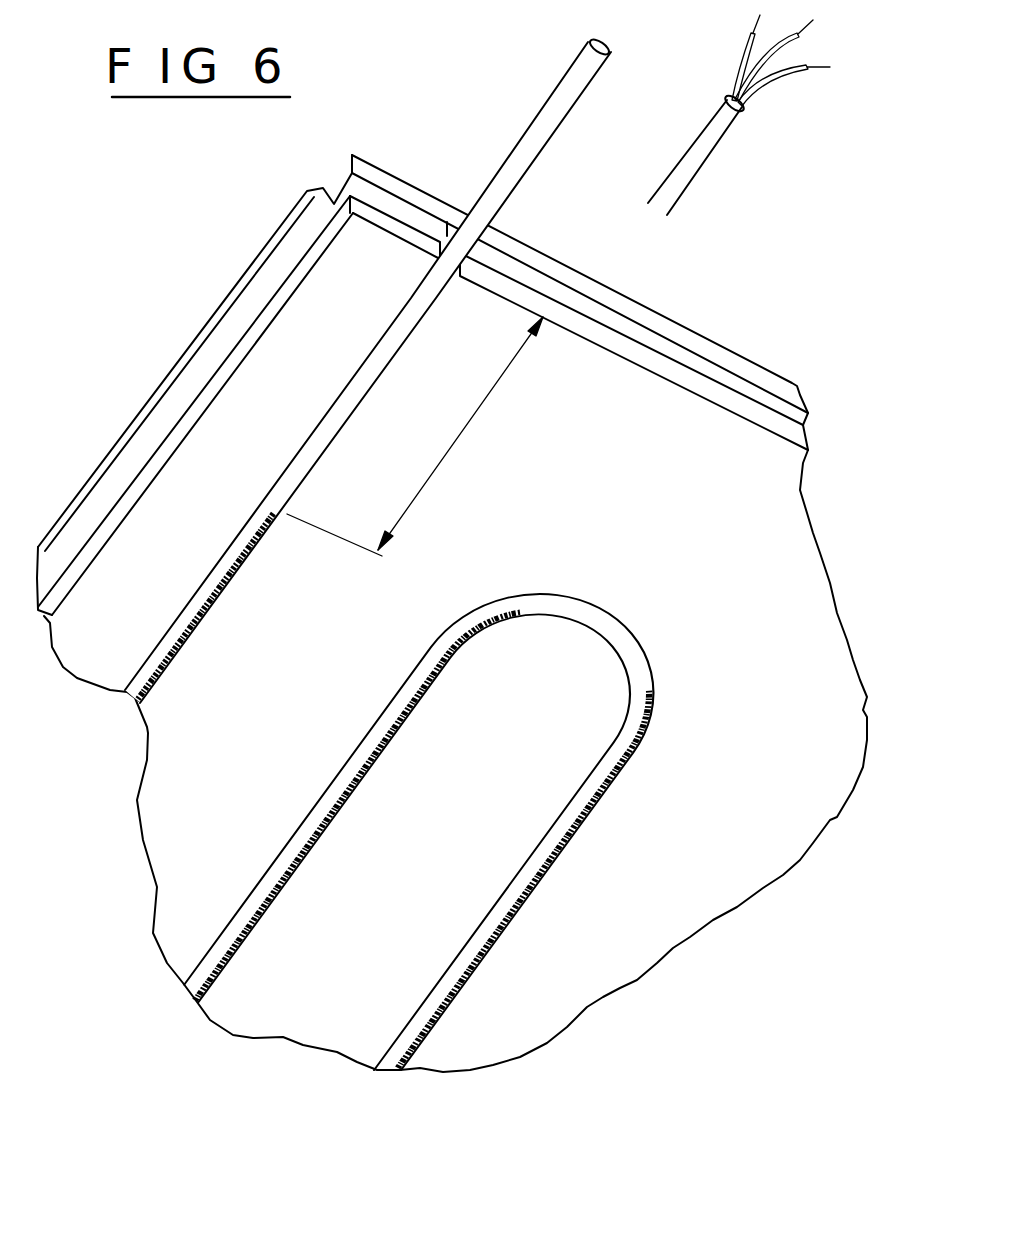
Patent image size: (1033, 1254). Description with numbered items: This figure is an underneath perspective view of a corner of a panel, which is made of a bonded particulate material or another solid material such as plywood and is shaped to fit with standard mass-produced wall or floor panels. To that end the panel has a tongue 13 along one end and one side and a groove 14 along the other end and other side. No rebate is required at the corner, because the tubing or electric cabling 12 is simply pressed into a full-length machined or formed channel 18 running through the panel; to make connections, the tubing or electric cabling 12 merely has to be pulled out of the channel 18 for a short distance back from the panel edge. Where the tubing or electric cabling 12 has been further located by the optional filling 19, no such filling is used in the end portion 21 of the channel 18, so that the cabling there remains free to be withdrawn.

The tubing or electric cabling 12 is at (718, 128).
The tongue 13 is at (152, 433).
The groove 14 is at (757, 393).
The channel 18 is at (640, 640).
The filling 19 is at (572, 823).
The end portion 21 is at (415, 436).